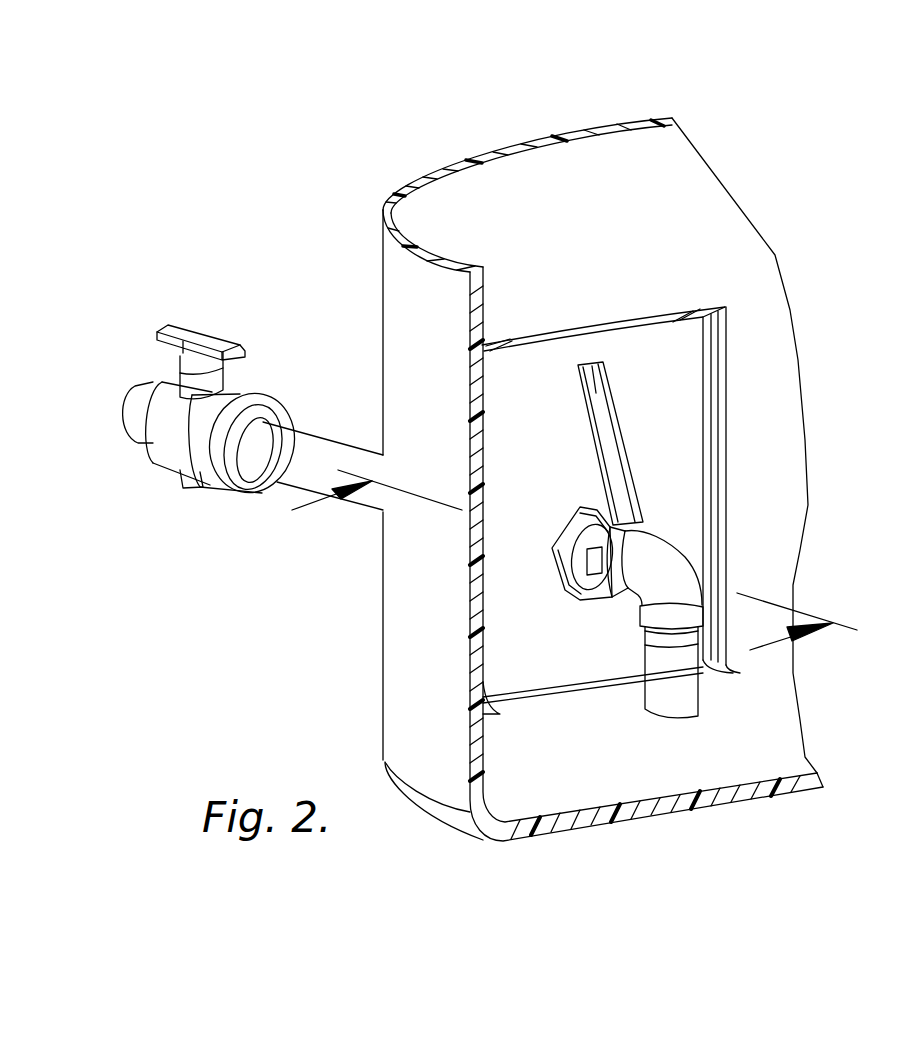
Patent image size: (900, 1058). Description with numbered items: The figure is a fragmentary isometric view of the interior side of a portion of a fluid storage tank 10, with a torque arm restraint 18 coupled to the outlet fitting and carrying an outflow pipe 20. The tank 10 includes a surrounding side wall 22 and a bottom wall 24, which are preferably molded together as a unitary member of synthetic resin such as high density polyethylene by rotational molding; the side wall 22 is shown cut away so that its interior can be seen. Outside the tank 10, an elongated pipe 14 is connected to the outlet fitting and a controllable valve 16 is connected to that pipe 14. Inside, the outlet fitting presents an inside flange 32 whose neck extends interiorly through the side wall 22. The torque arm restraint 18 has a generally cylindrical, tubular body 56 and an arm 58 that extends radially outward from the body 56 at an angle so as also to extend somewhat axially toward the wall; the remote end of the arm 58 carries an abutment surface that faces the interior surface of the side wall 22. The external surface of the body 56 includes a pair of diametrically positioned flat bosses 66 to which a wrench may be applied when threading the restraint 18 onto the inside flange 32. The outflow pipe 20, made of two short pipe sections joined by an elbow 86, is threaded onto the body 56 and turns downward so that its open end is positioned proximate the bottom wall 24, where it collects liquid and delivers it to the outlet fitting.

The fluid storage tank 10 is at (358, 270).
The elongated pipe 14 is at (308, 438).
The controllable valve 16 is at (250, 392).
The torque arm restraint 18 is at (645, 490).
The outflow pipe 20 is at (635, 602).
The side wall 22 is at (693, 202).
The bottom wall 24 is at (563, 777).
The inside flange 32 is at (560, 577).
The body 56 is at (593, 537).
The arm 58 is at (613, 405).
The flat bosses 66 is at (590, 560).
The elbow 86 is at (680, 567).